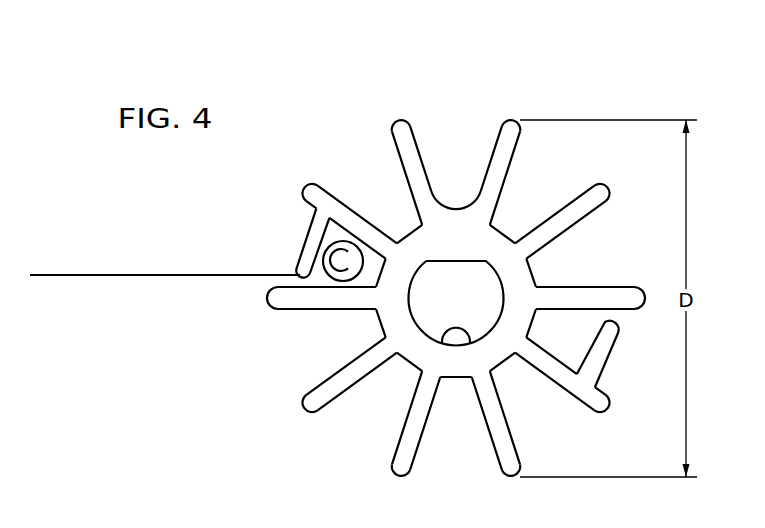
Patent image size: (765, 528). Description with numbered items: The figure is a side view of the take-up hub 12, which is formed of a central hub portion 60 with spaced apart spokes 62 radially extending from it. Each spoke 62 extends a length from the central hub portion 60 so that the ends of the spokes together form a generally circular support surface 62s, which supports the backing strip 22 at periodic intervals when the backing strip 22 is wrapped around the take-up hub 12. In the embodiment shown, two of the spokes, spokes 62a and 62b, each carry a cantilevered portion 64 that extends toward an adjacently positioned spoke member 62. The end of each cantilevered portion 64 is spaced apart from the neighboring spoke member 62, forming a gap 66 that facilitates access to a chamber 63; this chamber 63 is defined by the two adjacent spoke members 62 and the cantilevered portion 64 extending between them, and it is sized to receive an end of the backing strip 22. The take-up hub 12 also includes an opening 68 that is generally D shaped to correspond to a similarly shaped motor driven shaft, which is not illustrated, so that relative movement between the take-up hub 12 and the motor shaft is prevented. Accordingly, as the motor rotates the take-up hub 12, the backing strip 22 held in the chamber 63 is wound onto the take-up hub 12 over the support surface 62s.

The take-up hub 12 is at (618, 71).
The backing strip 22 is at (172, 274).
The central hub portion 60 is at (532, 272).
The spoke 62 is at (421, 150).
The spoke 62a is at (571, 396).
The spoke 62b is at (343, 202).
The support surface 62s is at (393, 118).
The chamber 63 is at (335, 276).
The cantilevered portion 64 is at (304, 240).
The gap 66 is at (268, 290).
The opening 68 is at (461, 346).